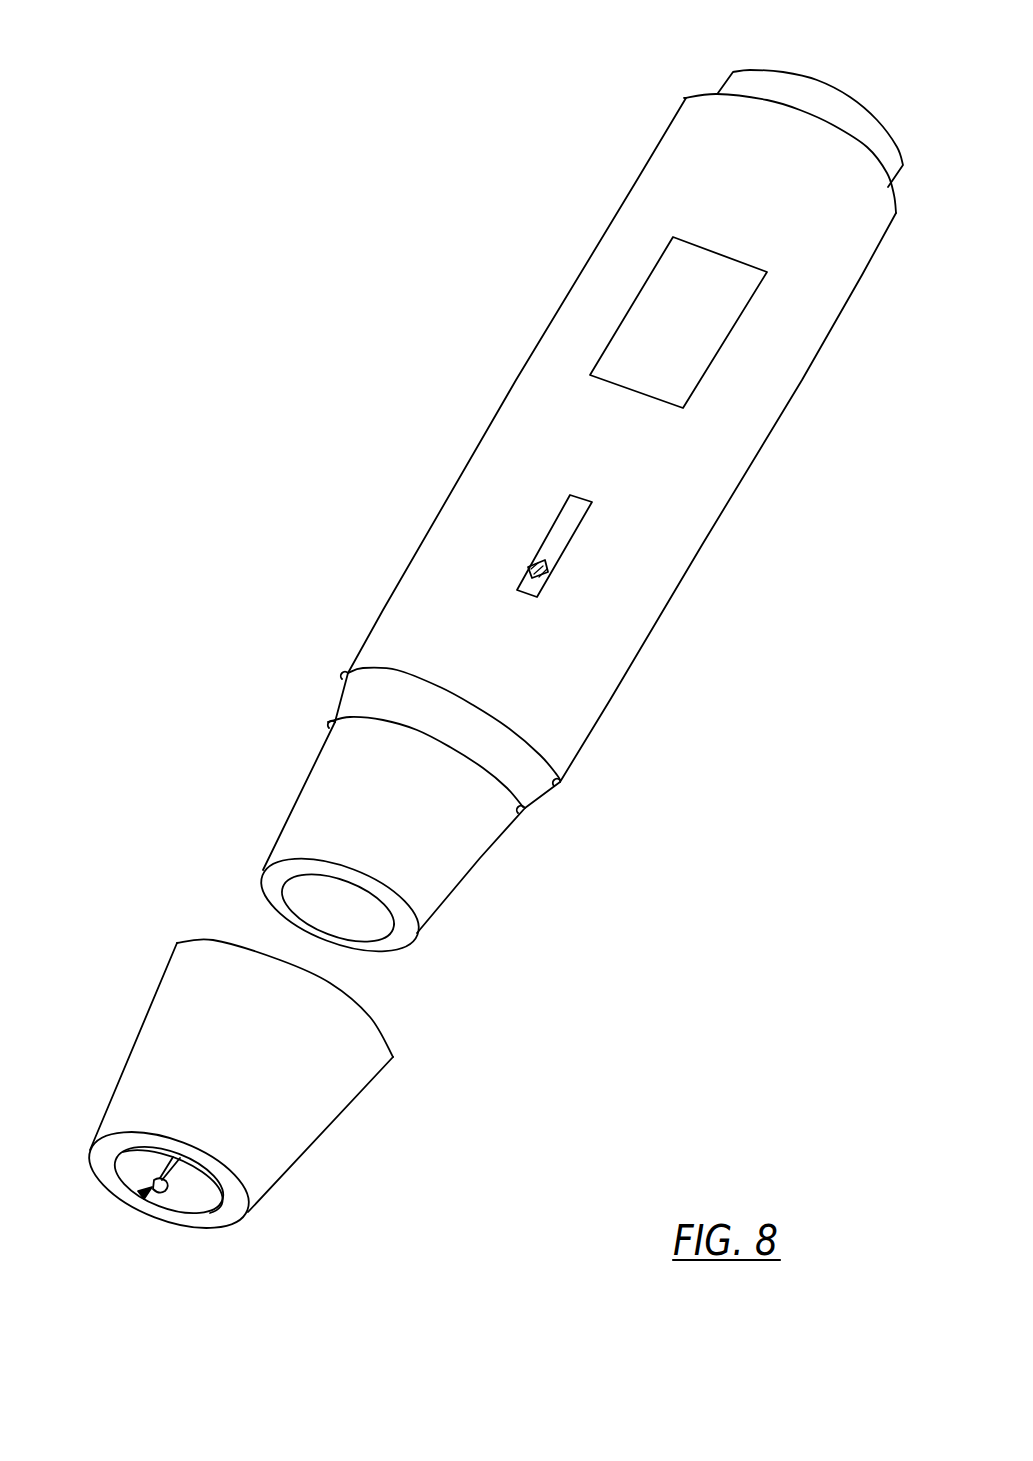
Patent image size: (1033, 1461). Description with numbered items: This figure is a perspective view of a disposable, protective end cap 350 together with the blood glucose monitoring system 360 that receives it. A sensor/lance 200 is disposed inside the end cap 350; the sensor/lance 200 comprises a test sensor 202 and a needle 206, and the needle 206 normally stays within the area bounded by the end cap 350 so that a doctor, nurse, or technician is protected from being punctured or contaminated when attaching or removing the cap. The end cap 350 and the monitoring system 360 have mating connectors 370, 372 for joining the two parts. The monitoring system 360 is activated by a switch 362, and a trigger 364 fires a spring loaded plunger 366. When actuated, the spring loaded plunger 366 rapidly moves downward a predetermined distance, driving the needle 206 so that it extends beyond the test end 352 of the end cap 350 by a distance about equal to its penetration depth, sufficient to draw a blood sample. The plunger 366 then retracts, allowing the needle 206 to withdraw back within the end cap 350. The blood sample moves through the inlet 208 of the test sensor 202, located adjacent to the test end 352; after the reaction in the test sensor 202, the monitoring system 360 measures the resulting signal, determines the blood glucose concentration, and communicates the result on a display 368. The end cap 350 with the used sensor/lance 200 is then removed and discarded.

The sensor/lance 200 is at (143, 1193).
The test sensor 202 is at (143, 1163).
The needle 206 is at (160, 1190).
The inlet 208 is at (157, 1178).
The end cap 350 is at (300, 1135).
The test end 352 is at (233, 1213).
The blood glucose monitoring system 360 is at (647, 598).
The switch 362 is at (572, 514).
The trigger 364 is at (792, 90).
The spring loaded plunger 366 is at (450, 875).
The display 368 is at (677, 360).
The connector 370 is at (213, 940).
The connector 372 is at (360, 698).